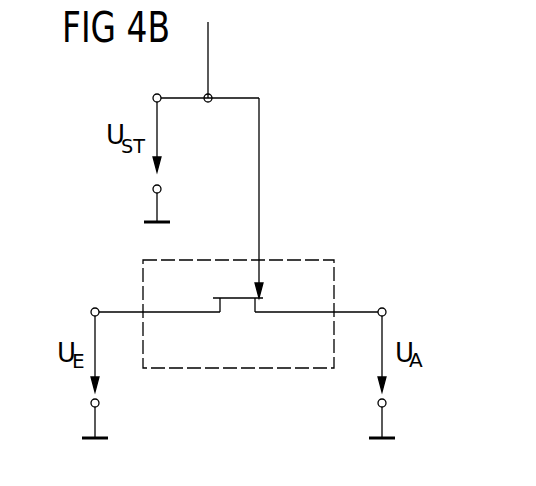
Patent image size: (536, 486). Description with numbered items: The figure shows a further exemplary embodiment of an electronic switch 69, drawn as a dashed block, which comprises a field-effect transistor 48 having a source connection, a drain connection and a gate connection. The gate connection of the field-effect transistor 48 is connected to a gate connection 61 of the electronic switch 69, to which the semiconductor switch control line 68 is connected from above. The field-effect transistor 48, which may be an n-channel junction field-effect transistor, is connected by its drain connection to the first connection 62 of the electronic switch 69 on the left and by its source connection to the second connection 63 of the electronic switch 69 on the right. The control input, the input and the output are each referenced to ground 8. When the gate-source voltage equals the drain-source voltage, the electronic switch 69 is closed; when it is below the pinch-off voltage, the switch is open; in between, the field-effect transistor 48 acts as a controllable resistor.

The semiconductor switch control line 68 is at (210, 63).
The gate connection 61 is at (261, 172).
The reference potential (ground) 8 is at (160, 220).
The first connection 62 is at (119, 310).
The second connection 63 is at (357, 310).
The field-effect transistor 48 is at (241, 302).
The electronic switch 69 is at (226, 371).